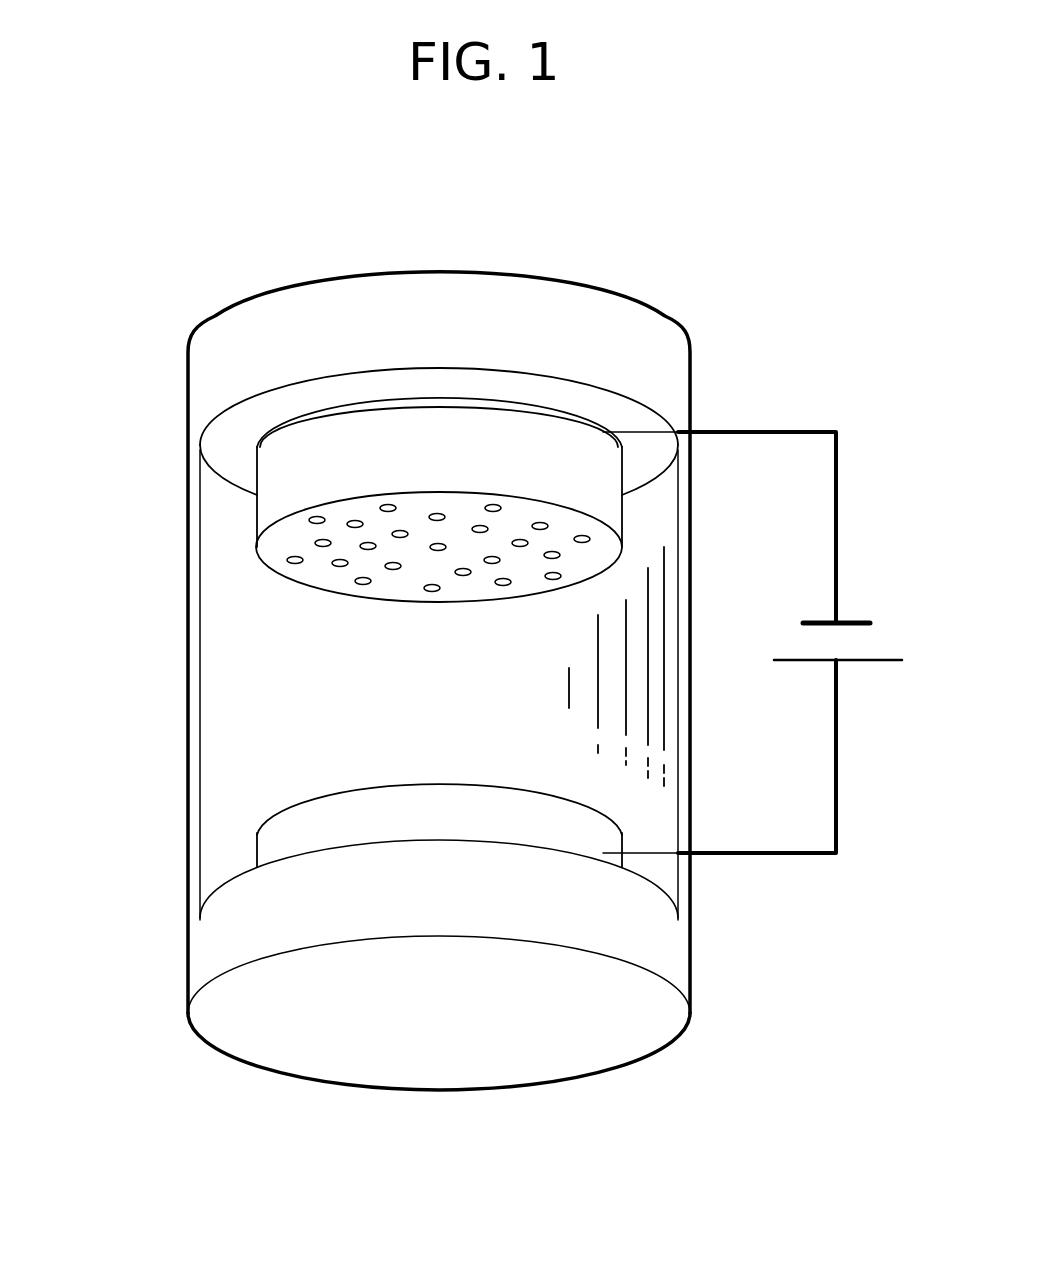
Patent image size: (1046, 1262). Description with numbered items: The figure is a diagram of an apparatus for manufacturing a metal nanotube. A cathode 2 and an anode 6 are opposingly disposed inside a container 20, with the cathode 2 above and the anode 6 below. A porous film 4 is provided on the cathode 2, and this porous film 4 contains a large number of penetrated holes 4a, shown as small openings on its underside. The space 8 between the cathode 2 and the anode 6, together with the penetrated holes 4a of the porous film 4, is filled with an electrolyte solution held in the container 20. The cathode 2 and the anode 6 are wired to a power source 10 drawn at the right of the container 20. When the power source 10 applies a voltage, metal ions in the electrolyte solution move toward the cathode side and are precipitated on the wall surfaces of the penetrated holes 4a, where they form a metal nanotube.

The cathode 2 is at (277, 432).
The porous film 4 is at (277, 507).
The penetrated holes 4a is at (334, 576).
The anode 6 is at (283, 835).
The space 8 is at (252, 673).
The power source 10 is at (890, 589).
The container 20 is at (257, 752).